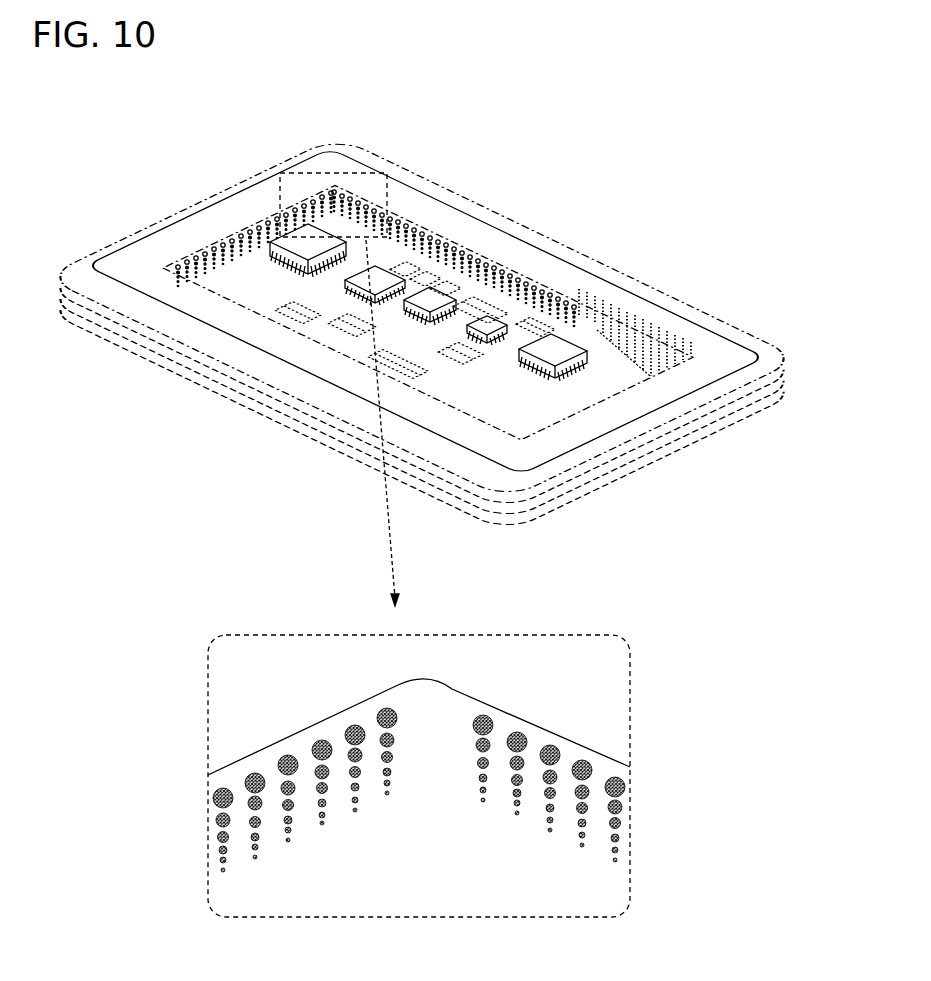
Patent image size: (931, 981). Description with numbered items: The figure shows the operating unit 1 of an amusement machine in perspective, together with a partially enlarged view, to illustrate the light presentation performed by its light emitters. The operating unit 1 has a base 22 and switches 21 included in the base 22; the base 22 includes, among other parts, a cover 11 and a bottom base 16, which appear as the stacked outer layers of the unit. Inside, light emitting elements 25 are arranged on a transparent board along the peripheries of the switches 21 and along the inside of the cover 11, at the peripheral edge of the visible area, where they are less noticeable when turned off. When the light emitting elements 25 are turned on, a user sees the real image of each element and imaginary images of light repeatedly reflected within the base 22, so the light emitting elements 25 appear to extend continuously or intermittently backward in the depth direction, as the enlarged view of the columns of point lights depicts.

The operating unit 1 is at (621, 166).
The cover 11 is at (303, 385).
The bottom base 16 is at (340, 438).
The switches 21 is at (550, 360).
The base 22 is at (622, 345).
The light emitting elements 25 is at (262, 225).